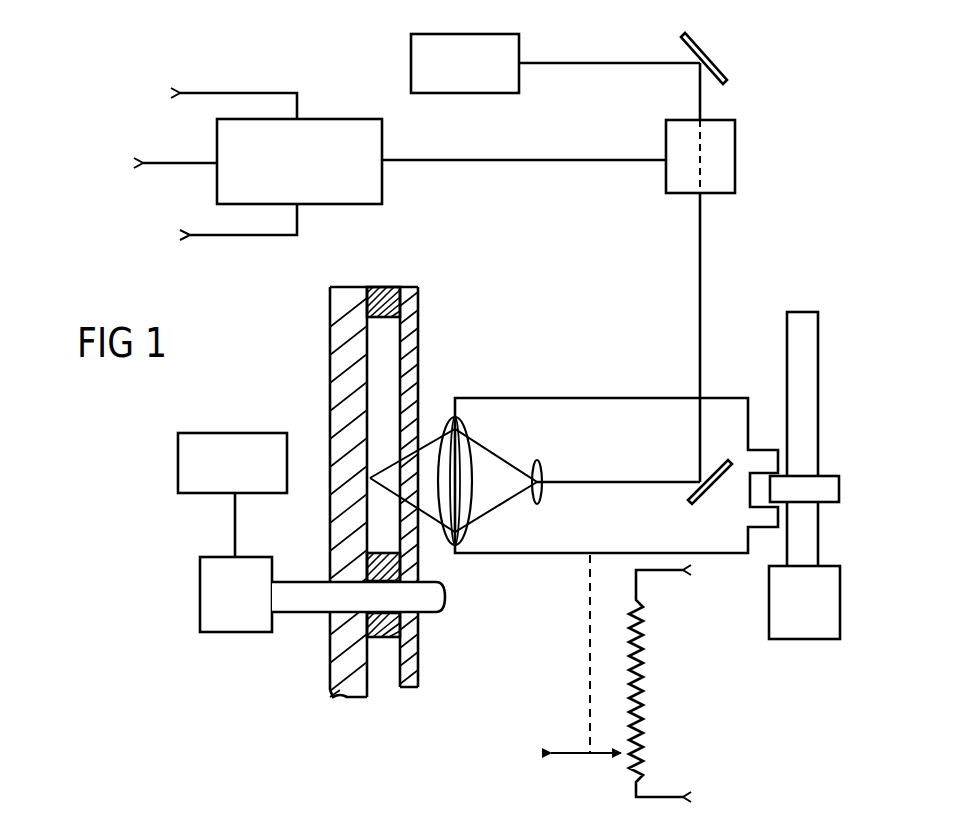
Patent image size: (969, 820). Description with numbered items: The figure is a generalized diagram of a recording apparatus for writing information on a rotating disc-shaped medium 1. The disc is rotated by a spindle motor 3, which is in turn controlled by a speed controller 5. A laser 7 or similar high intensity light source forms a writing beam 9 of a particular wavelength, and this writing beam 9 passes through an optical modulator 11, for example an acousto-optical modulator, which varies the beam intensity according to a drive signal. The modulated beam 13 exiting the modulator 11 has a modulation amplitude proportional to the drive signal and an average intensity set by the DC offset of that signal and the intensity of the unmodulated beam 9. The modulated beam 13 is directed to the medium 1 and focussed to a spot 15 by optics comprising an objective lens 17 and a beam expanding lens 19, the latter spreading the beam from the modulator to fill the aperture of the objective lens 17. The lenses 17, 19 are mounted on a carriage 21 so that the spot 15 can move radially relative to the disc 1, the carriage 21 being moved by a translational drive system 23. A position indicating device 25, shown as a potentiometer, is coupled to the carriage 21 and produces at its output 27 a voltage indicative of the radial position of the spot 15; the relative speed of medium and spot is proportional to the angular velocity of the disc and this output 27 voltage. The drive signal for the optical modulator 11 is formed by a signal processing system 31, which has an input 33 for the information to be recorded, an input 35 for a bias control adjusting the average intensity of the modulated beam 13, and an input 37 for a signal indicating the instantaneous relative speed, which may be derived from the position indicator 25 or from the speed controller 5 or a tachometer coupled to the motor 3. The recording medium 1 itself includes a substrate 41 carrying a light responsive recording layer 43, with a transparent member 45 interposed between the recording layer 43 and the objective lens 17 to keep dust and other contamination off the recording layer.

The rotating disc-shaped medium 1 is at (427, 266).
The spindle motor 3 is at (200, 566).
The speed controller 5 is at (178, 446).
The laser 7 is at (418, 44).
The writing beam 9 is at (574, 63).
The optical modulator 11 is at (667, 130).
The modulated beam 13 is at (700, 307).
The spot 15 is at (371, 478).
The objective lens 17 is at (463, 421).
The beam expanding lens 19 is at (540, 470).
The carriage 21 is at (535, 413).
The translational drive system 23 is at (770, 628).
The position indicating device 25 is at (656, 693).
The output 27 is at (550, 757).
The signal processing system 31 is at (382, 135).
The input 33 is at (144, 162).
The input 35 is at (196, 237).
The input 37 is at (198, 93).
The substrate 41 is at (332, 313).
The light responsive recording layer 43 is at (374, 689).
The transparent member 45 is at (418, 316).